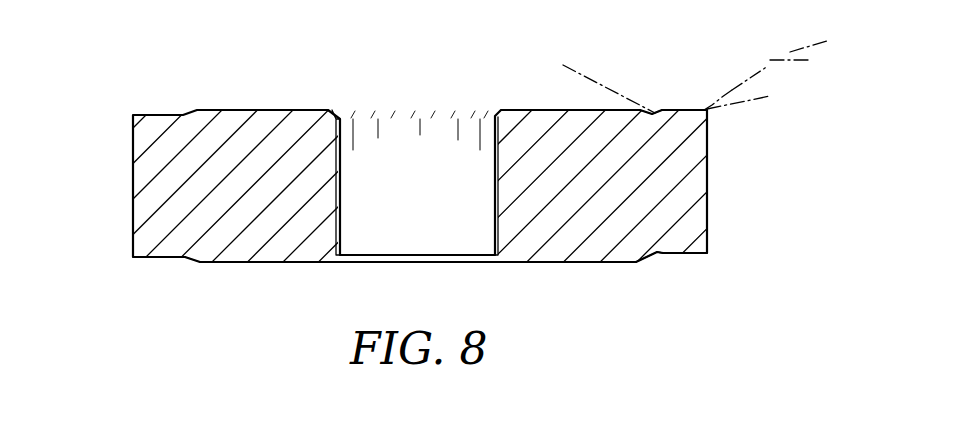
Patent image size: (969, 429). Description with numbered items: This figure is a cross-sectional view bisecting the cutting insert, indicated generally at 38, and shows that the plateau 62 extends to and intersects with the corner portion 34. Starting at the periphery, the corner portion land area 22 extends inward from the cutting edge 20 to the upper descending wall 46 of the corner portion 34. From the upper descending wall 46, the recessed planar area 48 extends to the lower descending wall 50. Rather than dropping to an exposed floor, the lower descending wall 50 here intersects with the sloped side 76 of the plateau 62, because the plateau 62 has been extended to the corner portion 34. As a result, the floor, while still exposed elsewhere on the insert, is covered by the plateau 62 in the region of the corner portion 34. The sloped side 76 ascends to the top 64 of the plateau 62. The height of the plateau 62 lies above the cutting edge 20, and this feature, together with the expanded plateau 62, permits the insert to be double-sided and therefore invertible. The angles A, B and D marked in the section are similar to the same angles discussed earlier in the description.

The cutting insert body 38 is at (124, 113).
The cutting edge 20 is at (133, 259).
The plateau 62 is at (255, 265).
The top of the plateau 64 is at (535, 107).
The sloped side of the plateau 76 is at (652, 110).
The lower descending wall 50 is at (660, 110).
The recessed planar area 48 is at (670, 110).
The upper descending wall 46 is at (702, 110).
The corner portion land area 22 is at (736, 83).
The corner portion 34 is at (688, 131).
The angle D is at (610, 52).
The angle A is at (773, 97).
The angle B is at (773, 20).